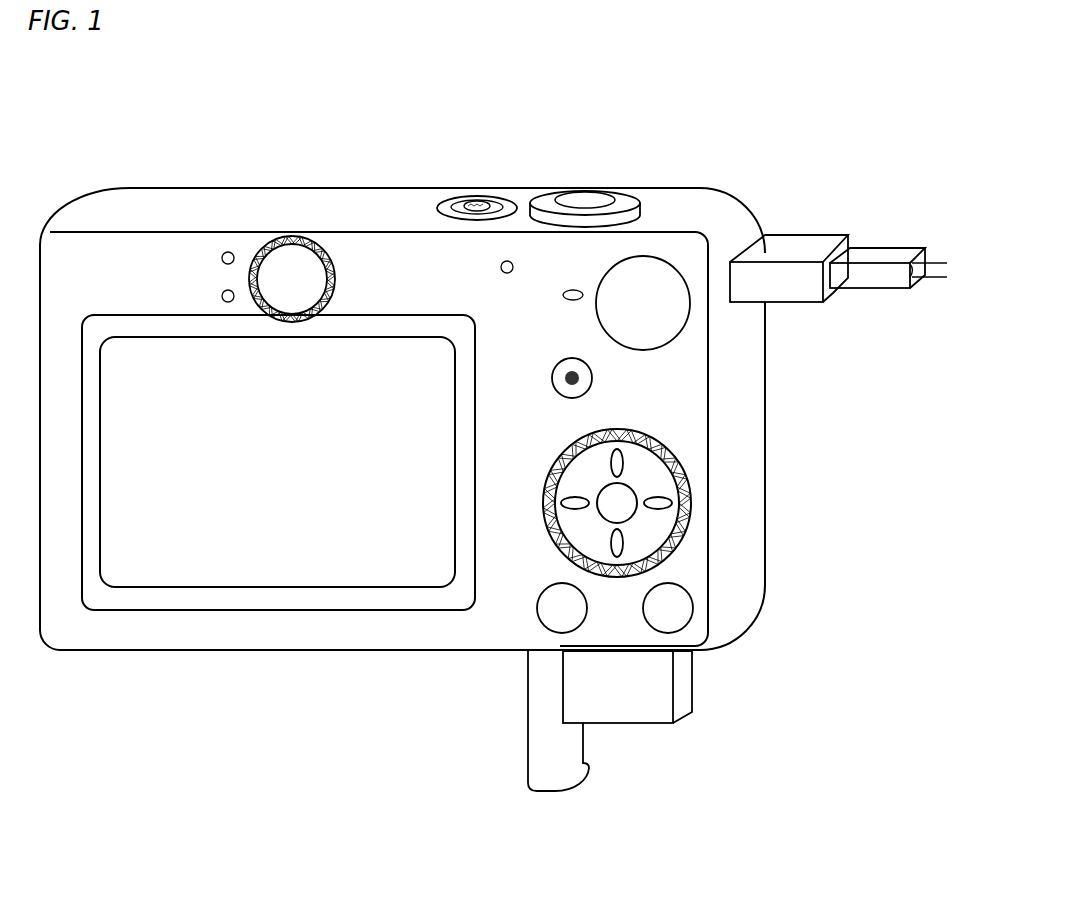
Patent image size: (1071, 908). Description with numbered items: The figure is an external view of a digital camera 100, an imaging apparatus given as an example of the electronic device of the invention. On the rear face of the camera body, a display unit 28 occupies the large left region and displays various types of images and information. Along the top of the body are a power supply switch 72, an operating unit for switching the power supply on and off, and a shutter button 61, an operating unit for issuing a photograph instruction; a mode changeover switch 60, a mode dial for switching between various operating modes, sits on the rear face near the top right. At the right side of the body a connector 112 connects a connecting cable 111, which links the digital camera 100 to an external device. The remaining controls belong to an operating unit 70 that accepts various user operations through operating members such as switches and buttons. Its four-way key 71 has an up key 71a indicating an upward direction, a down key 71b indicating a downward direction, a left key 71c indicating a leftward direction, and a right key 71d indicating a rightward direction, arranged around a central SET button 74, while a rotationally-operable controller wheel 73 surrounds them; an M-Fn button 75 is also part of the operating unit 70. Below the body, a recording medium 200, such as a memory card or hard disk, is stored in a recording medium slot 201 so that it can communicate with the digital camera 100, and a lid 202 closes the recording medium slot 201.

The digital camera 100 is at (117, 152).
The display unit 28 is at (191, 372).
The power supply switch 72 is at (486, 207).
The M-Fn button 75 is at (510, 258).
The shutter button 61 is at (598, 192).
The mode changeover switch 60 is at (655, 265).
The connector 112 is at (757, 240).
The connecting cable 111 is at (873, 257).
The operating unit 70 is at (600, 228).
The four-way key 71 is at (598, 488).
The controller wheel 73 is at (590, 442).
The up key 71a is at (607, 465).
The down key 71b is at (607, 543).
The left key 71c is at (553, 503).
The right key 71d is at (671, 505).
The SET button 74 is at (625, 510).
The recording medium 200 is at (614, 697).
The recording medium slot 201 is at (648, 656).
The lid 202 is at (554, 767).